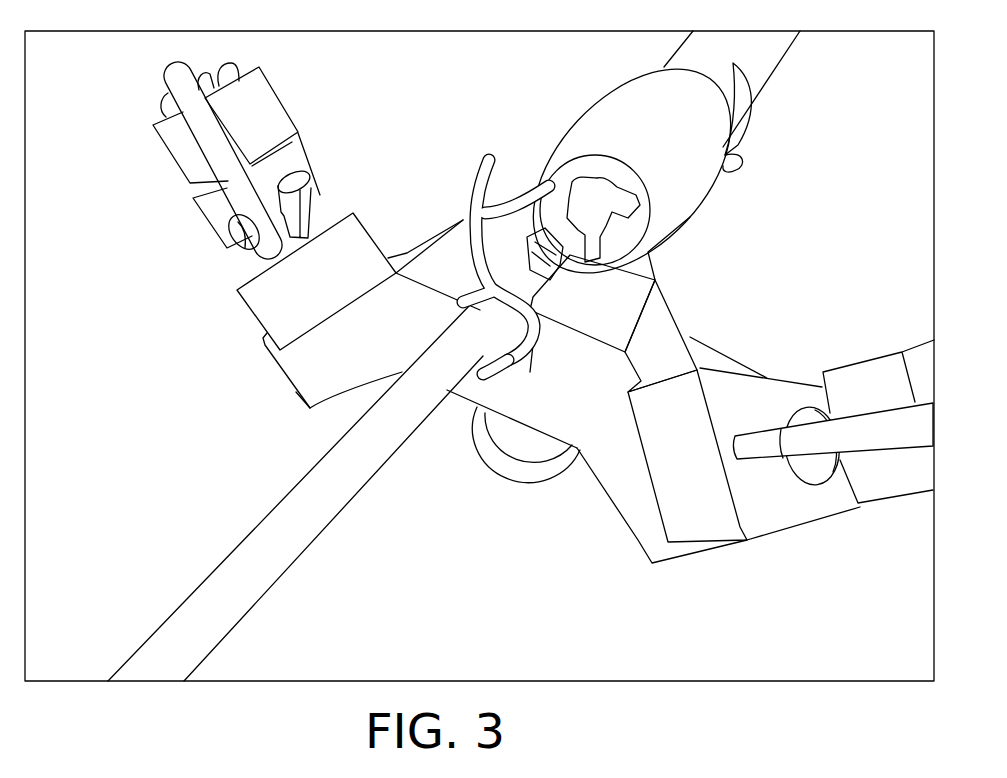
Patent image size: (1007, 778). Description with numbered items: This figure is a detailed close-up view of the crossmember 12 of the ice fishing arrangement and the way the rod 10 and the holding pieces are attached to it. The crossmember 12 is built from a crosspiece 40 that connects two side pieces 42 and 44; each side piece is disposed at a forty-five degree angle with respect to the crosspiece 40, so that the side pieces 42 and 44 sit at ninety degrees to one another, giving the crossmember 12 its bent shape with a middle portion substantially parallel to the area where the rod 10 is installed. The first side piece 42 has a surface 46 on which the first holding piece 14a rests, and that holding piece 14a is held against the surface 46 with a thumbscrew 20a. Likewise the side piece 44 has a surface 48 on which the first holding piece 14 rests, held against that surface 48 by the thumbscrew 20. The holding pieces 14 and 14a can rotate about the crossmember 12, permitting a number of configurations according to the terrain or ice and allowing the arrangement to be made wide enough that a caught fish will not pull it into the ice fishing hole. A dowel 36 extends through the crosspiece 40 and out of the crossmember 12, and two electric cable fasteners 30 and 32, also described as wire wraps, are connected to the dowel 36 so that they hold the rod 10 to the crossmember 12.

The rod 10 is at (350, 504).
The crossmember 12 is at (706, 286).
The first holding piece 14 is at (778, 503).
The first holding piece 14a is at (273, 318).
The thumbscrew 20 is at (822, 472).
The thumbscrew 20a is at (242, 247).
The electric cable fastener 30 is at (627, 231).
The electric cable fastener 32 is at (507, 361).
The dowel 36 is at (472, 368).
The crosspiece 40 is at (453, 243).
The first side piece 42 is at (326, 380).
The side piece 44 is at (650, 535).
The surface 46 is at (402, 252).
The surface 48 is at (683, 352).